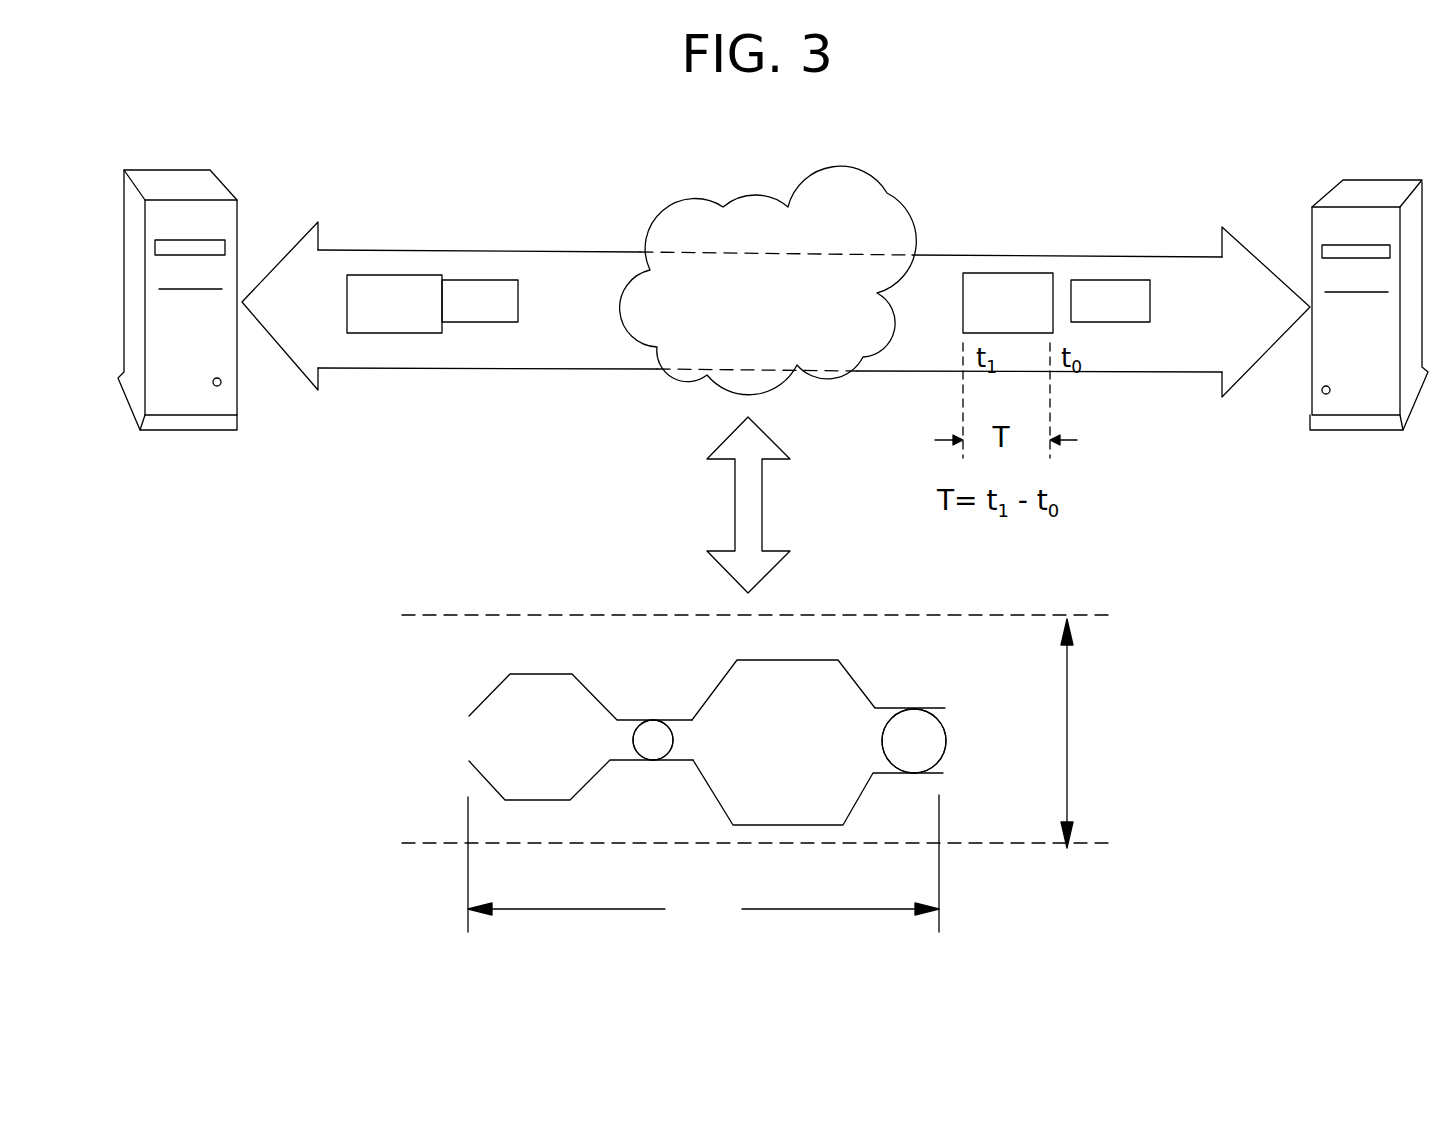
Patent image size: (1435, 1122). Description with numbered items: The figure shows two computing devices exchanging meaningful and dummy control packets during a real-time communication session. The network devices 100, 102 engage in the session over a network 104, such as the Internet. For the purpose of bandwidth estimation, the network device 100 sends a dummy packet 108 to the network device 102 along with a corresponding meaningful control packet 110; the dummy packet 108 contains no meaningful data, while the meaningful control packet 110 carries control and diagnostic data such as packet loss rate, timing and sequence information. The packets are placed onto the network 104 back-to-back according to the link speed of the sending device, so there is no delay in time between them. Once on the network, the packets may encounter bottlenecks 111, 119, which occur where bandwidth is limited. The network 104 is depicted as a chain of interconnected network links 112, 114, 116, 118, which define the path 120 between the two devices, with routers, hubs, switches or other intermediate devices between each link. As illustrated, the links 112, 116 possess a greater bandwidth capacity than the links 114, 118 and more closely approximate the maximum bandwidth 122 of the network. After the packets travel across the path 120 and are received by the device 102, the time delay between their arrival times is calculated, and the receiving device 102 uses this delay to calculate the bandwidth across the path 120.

The network device 100 is at (171, 170).
The network device 102 is at (1380, 178).
The network 104 is at (842, 163).
The dummy packet 108 is at (481, 270).
The meaningful control packet 110 is at (372, 275).
The bottleneck 111 is at (677, 718).
The network link 112 is at (543, 672).
The network link 114 is at (653, 745).
The network link 116 is at (782, 658).
The network link 118 is at (940, 708).
The bottleneck 119 is at (912, 753).
The path 120 is at (703, 865).
The maximum bandwidth 122 is at (1175, 710).